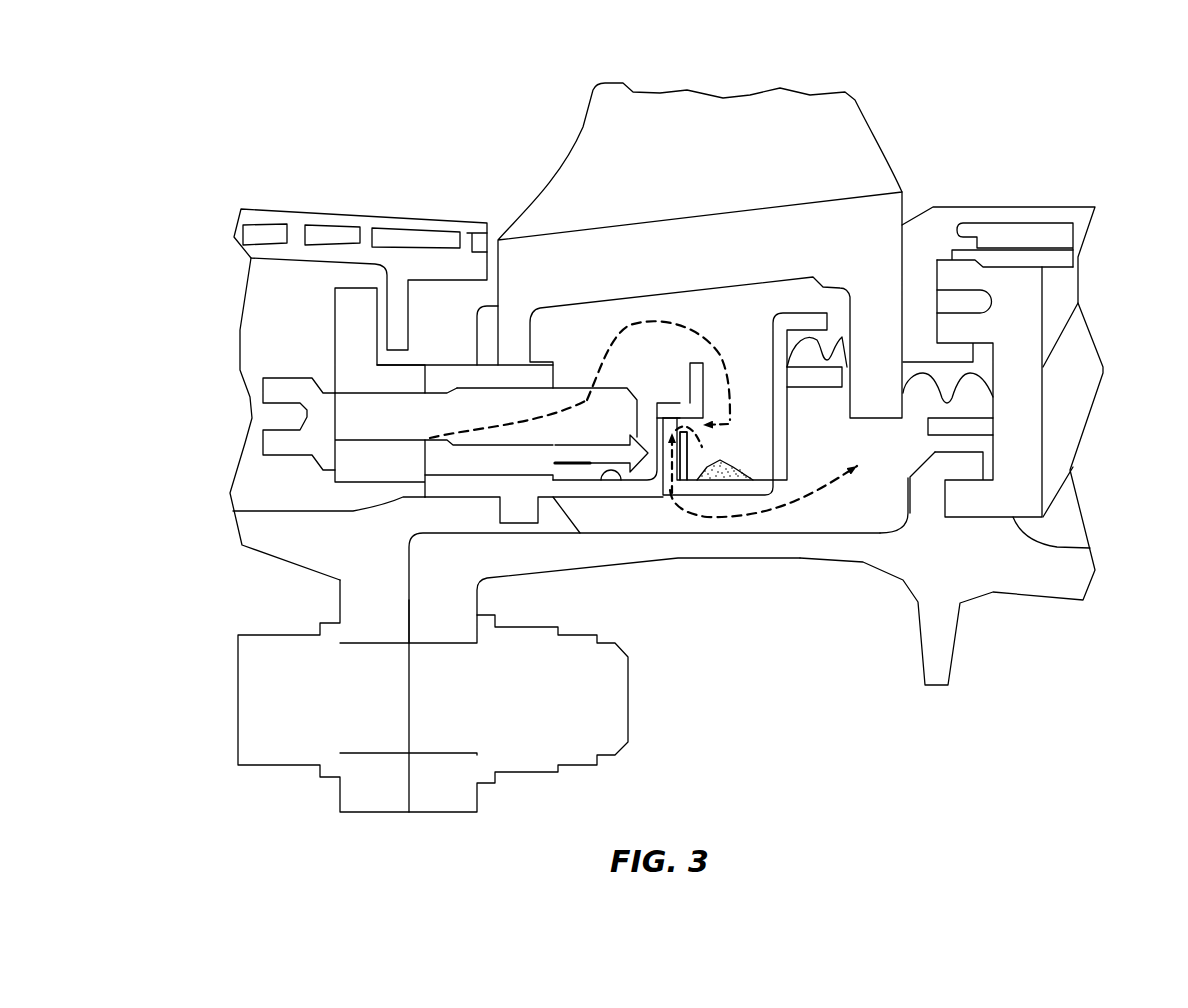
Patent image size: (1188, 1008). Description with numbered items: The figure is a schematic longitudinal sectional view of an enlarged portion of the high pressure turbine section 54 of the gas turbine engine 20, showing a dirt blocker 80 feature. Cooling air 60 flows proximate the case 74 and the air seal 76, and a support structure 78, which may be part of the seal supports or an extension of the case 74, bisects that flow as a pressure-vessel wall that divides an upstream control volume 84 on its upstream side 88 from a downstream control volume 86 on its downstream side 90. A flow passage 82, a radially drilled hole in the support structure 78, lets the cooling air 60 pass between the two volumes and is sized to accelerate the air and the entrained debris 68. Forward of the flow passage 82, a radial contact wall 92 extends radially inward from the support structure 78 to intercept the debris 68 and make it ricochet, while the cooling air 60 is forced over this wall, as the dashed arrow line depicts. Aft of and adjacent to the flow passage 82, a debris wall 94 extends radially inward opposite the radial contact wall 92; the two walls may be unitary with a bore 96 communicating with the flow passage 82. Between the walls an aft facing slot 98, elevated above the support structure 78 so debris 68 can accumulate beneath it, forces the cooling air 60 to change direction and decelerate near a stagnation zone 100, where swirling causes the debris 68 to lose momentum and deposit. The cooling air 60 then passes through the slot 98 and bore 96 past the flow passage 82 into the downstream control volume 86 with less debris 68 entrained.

The gas turbine engine 20 is at (264, 119).
The high pressure turbine section 54 is at (465, 128).
The cooling air 60 is at (600, 338).
The debris 68 is at (567, 450).
The case 74 is at (855, 562).
The air seal 76 is at (970, 205).
The support structure 78 is at (787, 414).
The dirt blocker 80 is at (667, 373).
The flow passage 82 is at (667, 505).
The upstream control volume 84 is at (645, 376).
The downstream control volume 86 is at (868, 515).
The upstream side 88 is at (623, 482).
The downstream side 90 is at (583, 503).
The radial contact wall 92 is at (643, 407).
The debris wall 94 is at (687, 462).
The bore 96 is at (670, 492).
The aft facing slot 98 is at (733, 435).
The stagnation zone 100 is at (732, 343).